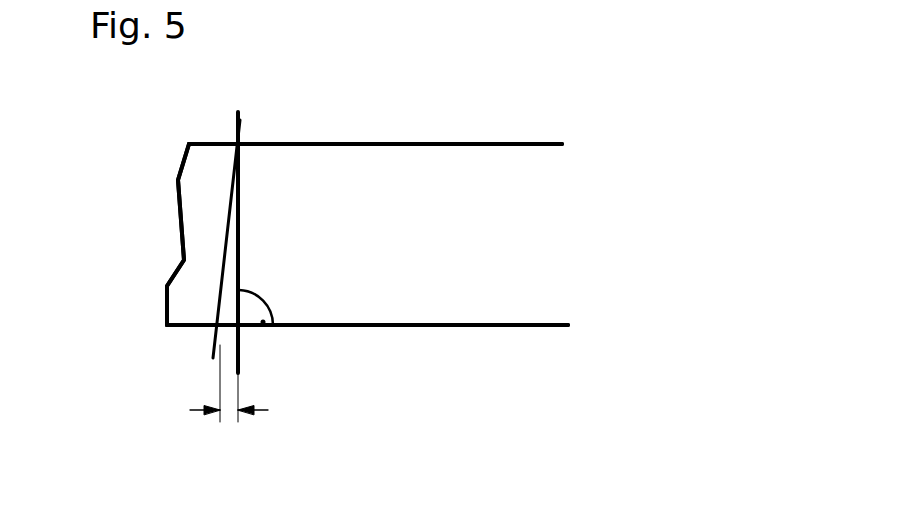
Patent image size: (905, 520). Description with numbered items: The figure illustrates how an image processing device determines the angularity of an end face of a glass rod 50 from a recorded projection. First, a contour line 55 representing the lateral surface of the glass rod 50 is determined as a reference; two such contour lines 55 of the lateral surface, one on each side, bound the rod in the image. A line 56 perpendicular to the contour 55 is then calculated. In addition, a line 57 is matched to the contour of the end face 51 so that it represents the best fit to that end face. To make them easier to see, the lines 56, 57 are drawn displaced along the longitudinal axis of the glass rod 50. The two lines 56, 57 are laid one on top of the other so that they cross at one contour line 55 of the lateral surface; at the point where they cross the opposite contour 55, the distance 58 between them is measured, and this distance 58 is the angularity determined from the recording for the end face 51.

The glass rod 50 is at (458, 275).
The end face 51 is at (182, 235).
The contour line of the lateral surface 55 is at (445, 144).
The perpendicular line 56 is at (240, 237).
The matched line 57 is at (217, 302).
The distance 58 is at (230, 410).